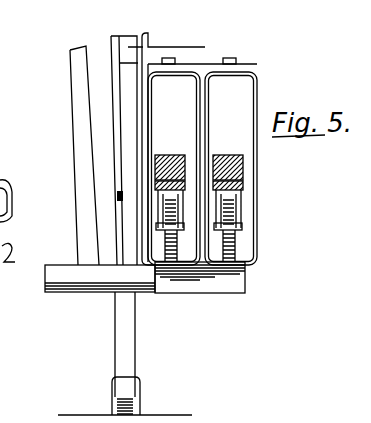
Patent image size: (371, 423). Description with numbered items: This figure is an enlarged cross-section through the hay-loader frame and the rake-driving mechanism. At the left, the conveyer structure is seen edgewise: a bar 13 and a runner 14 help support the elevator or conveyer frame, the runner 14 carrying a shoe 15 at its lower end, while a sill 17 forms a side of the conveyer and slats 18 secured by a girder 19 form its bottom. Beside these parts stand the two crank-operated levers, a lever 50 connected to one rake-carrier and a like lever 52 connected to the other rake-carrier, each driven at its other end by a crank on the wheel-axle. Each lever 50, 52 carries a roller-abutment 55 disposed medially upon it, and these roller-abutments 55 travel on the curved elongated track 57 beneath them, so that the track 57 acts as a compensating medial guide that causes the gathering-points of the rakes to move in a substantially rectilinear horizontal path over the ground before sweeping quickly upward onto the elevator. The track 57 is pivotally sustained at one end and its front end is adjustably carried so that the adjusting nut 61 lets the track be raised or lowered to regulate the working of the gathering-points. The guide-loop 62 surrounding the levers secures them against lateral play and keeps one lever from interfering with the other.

The bar 13 is at (199, 149).
The runner 14 is at (132, 342).
The shoe 15 is at (141, 390).
The sill 17 is at (117, 165).
The slat 18 is at (76, 236).
The girder 19 is at (82, 278).
The lever 50 is at (244, 168).
The lever 52 is at (170, 156).
The roller-abutment 55 is at (237, 250).
The curved elongated track 57 is at (228, 278).
The adjusting nut 61 is at (257, 80).
The guide-loop 62 is at (149, 90).